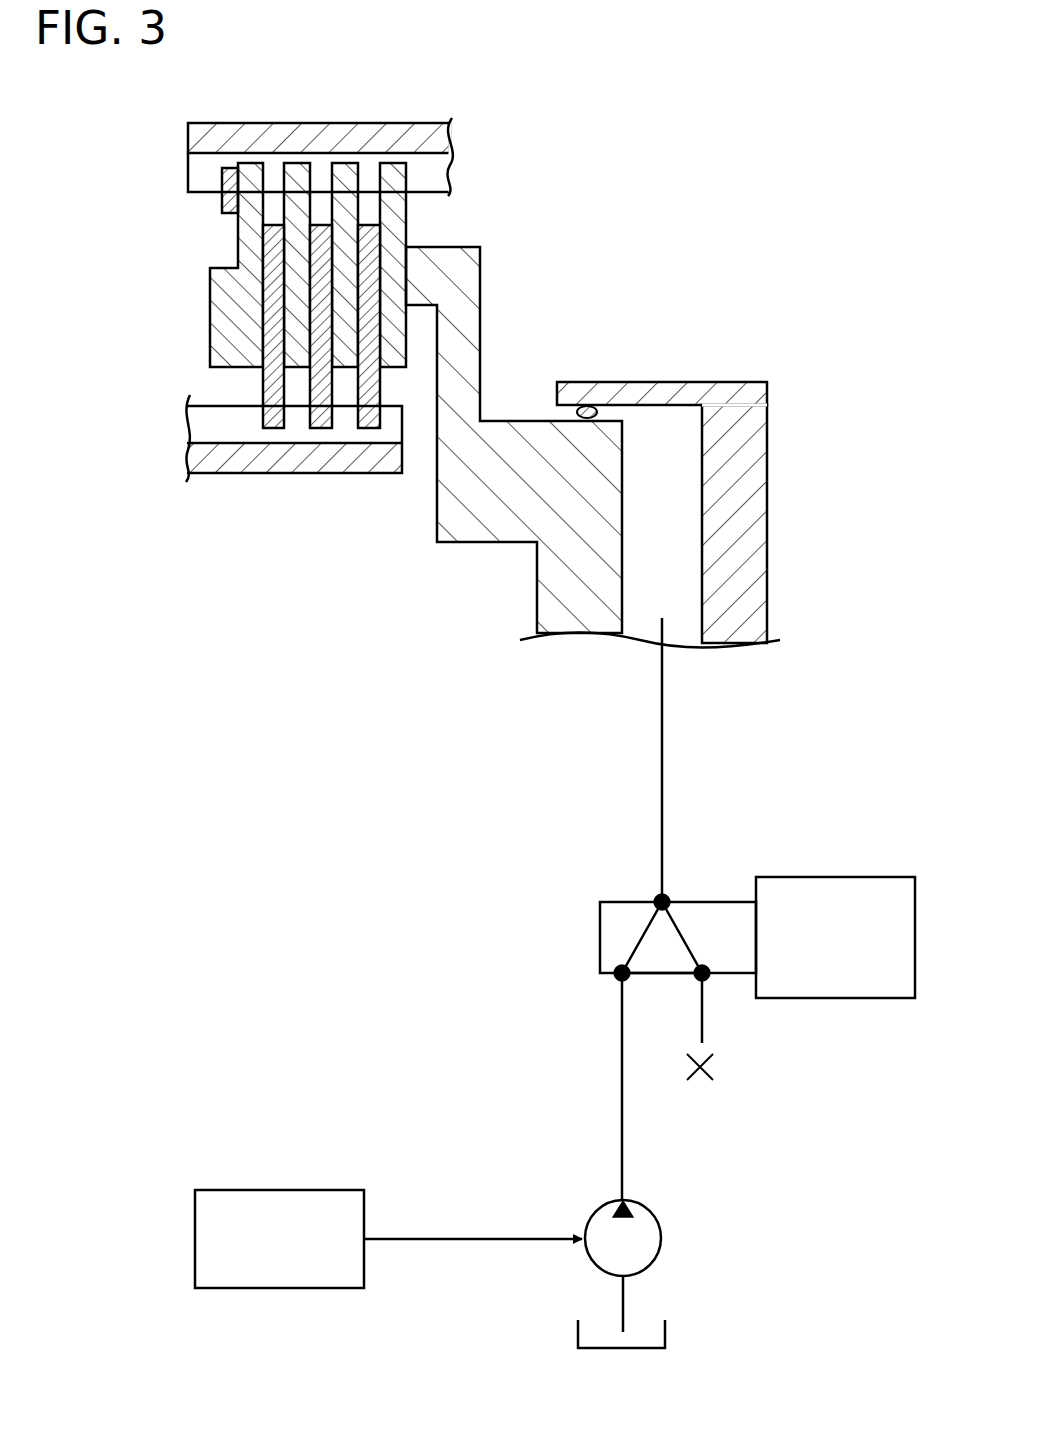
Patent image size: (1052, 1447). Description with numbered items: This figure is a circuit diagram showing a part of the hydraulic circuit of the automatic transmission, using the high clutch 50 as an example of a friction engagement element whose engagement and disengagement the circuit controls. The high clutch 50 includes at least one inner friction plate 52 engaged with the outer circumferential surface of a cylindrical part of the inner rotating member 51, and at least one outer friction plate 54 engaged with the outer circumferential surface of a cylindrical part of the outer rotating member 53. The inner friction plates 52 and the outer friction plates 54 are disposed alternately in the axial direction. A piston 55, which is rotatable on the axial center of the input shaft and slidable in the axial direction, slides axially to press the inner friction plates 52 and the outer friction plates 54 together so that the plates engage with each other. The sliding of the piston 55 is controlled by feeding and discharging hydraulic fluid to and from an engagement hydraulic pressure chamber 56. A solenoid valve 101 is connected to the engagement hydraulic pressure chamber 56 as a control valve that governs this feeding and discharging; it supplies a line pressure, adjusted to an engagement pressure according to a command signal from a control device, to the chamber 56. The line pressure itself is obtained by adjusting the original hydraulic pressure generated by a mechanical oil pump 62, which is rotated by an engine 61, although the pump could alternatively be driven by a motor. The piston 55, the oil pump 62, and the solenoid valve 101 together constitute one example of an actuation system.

The high clutch 50 is at (668, 158).
The inner rotating member 51 is at (223, 462).
The inner friction plate 52 is at (274, 432).
The outer rotating member 53 is at (423, 123).
The outer friction plate 54 is at (299, 162).
The piston 55 is at (473, 318).
The engagement hydraulic pressure chamber 56 is at (681, 534).
The engine 61 is at (315, 1187).
The mechanical oil pump 62 is at (662, 1235).
The solenoid valve 101 is at (867, 875).